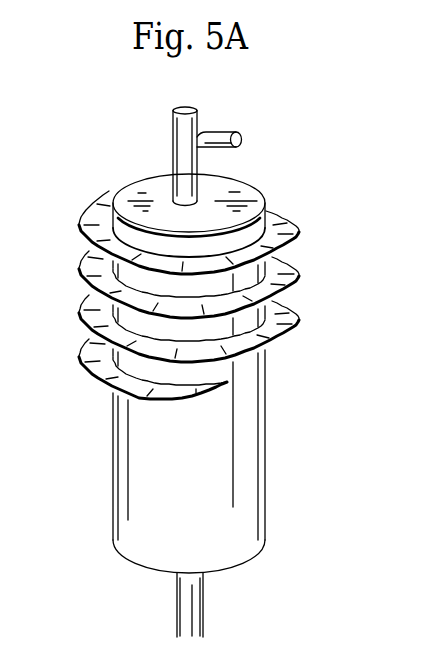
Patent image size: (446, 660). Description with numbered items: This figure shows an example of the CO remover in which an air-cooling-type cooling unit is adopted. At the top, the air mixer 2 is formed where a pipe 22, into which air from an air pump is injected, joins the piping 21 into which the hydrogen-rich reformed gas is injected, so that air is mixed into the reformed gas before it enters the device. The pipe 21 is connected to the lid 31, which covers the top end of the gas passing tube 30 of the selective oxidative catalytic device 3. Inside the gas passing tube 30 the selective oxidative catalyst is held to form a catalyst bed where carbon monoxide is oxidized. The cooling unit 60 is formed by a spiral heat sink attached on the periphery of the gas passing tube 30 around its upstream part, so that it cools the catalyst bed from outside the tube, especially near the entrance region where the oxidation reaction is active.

The air mixer 2 is at (161, 146).
The piping 21 is at (184, 165).
The pipe 22 is at (232, 131).
The selective oxidative catalytic device 3 is at (61, 413).
The gas passing tube 30 is at (247, 474).
The lid 31 is at (250, 193).
The cooling unit 60 is at (307, 272).